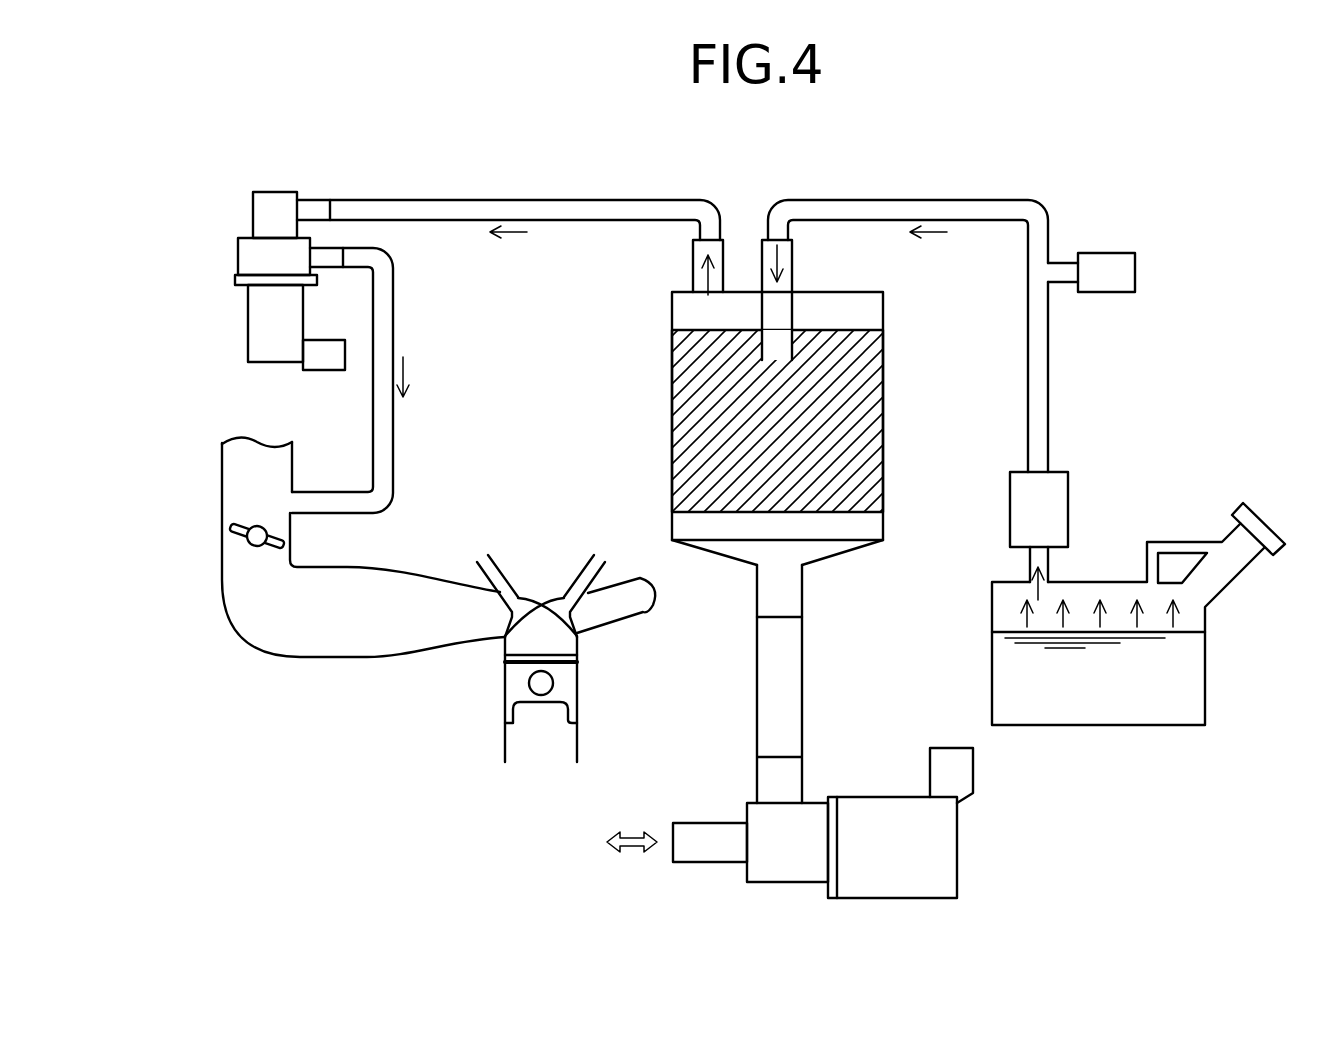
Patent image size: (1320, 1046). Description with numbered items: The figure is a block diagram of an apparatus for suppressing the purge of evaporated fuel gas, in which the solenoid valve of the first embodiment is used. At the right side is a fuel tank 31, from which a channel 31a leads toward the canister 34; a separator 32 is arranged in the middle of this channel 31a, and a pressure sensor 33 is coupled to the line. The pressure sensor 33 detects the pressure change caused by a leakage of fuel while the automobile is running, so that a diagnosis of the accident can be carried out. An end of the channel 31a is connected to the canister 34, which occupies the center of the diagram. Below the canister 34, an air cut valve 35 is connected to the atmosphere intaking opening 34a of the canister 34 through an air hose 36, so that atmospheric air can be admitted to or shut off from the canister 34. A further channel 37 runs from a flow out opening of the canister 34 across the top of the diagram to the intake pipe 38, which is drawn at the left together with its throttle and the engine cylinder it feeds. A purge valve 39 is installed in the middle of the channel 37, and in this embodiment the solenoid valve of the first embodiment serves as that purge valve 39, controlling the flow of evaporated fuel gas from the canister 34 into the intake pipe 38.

The fuel tank 31 is at (1218, 682).
The channel 31a is at (1030, 552).
The separator 32 is at (1068, 507).
The pressure sensor 33 is at (1147, 277).
The canister 34 is at (663, 421).
The atmosphere intaking opening 34a is at (780, 597).
The air cut valve 35 is at (967, 855).
The air hose 36 is at (780, 688).
The channel 37 is at (526, 200).
The intake pipe 38 is at (257, 563).
The purge valve 39 is at (253, 310).